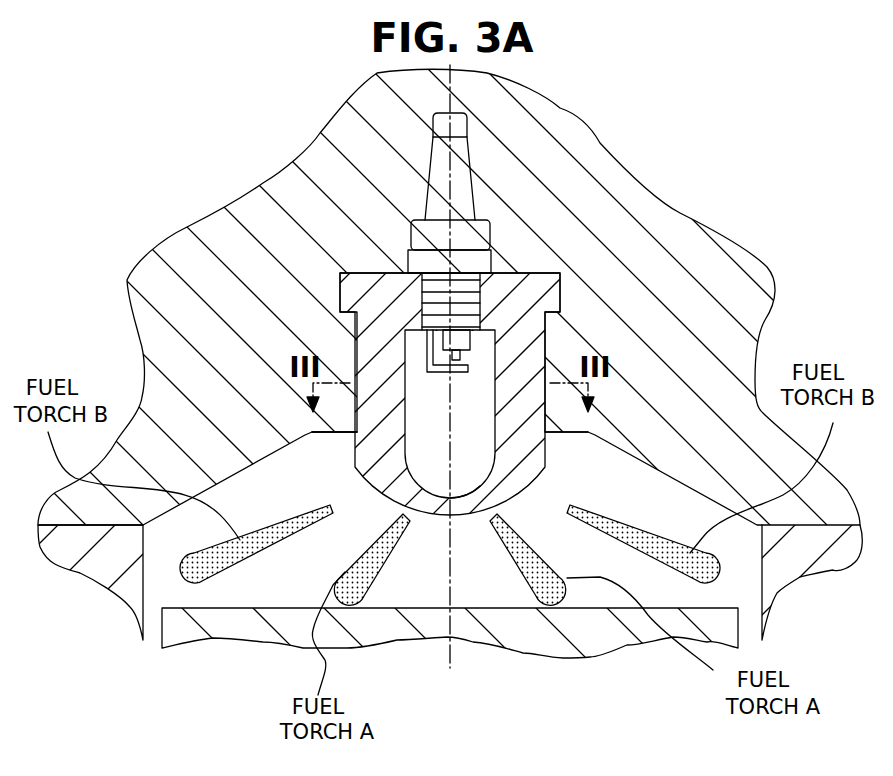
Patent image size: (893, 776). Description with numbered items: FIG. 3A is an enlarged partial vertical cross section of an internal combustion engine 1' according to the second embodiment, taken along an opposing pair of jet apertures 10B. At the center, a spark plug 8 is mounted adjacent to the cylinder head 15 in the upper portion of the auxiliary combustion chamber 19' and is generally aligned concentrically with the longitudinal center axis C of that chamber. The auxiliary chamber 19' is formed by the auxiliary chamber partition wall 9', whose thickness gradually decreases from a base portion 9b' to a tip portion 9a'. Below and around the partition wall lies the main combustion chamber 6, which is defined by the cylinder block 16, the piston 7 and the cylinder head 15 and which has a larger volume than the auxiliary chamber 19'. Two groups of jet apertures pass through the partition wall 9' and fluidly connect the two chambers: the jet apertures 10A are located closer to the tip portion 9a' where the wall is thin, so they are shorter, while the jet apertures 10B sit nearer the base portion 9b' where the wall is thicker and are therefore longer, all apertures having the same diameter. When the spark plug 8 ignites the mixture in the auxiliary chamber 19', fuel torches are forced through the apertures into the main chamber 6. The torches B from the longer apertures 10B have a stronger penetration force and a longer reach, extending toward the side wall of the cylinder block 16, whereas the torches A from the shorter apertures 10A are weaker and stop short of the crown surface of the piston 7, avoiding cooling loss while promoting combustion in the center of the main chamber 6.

The internal combustion engine 1' is at (452, 336).
The spark plug 8 is at (470, 163).
The auxiliary chamber partition wall 9' is at (428, 419).
The tip portion 9a' is at (444, 527).
The base portion 9b' is at (214, 369).
The auxiliary combustion chamber 19' is at (618, 371).
The cylinder head 15 is at (700, 370).
The cylinder block 16 is at (800, 580).
The main combustion chamber 6 is at (480, 585).
The piston 7 is at (232, 623).
The jet apertures 10A is at (417, 503).
The jet apertures 10B is at (367, 461).
The longitudinal center axis C is at (463, 381).